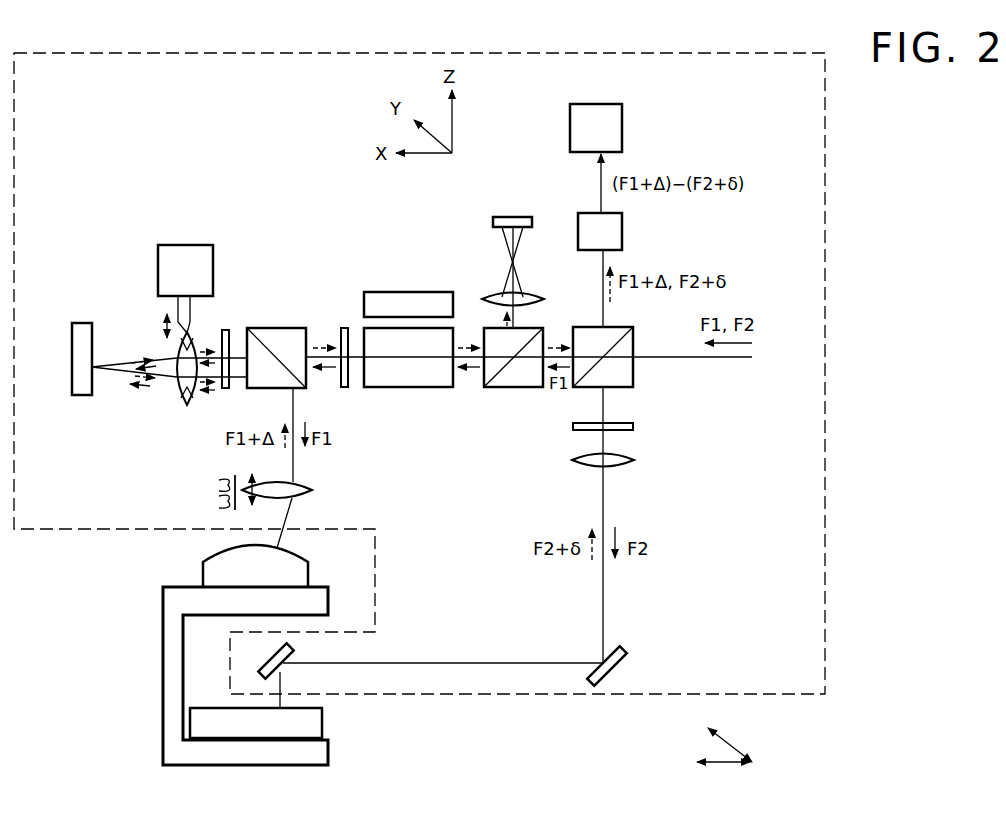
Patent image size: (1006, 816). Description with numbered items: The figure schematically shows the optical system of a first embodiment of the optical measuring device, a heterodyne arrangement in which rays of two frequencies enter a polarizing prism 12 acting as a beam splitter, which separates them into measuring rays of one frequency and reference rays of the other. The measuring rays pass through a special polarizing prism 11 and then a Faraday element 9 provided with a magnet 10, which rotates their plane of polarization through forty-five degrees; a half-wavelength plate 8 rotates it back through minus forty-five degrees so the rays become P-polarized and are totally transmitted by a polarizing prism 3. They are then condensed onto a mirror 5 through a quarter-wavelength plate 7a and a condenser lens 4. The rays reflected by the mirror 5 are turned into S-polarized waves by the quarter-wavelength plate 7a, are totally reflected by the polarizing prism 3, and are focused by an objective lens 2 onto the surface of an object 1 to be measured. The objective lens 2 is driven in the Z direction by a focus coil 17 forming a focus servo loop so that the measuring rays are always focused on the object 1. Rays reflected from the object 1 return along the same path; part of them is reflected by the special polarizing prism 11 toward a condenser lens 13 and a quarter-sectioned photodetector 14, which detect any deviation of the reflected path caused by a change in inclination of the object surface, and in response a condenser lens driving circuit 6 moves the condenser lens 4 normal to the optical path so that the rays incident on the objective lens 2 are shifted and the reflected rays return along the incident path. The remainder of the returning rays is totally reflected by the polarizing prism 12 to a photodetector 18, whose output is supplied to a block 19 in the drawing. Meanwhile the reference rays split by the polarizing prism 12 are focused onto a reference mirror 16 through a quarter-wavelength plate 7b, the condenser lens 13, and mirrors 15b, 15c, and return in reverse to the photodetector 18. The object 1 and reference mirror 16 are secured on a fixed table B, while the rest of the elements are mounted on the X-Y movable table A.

The object to be measured 1 is at (308, 572).
The objective lens 2 is at (312, 487).
The polarizing prism 3 is at (300, 328).
The condenser lens 4 is at (187, 405).
The mirror 5 is at (84, 395).
The condenser lens driving circuit 6 is at (198, 245).
The quarter-wavelength plate 7a is at (229, 330).
The quarter-wavelength plate 7b is at (633, 425).
The half-wavelength plate 8 is at (345, 387).
The Faraday element 9 is at (428, 387).
The magnet 10 is at (405, 292).
The special polarizing prism 11 is at (505, 387).
The polarizing prism 12 is at (633, 378).
The condenser lens 13 is at (540, 299).
The quarter-sectioned photodetector 14 is at (522, 217).
The mirror 15b is at (625, 665).
The mirror 15c is at (290, 650).
The reference mirror 16 is at (322, 725).
The focus coil 17 is at (216, 502).
The photodetector 18 is at (622, 230).
The signal processing unit 19 is at (622, 125).
The X-Y movable table A is at (777, 678).
The fixed table B is at (163, 656).